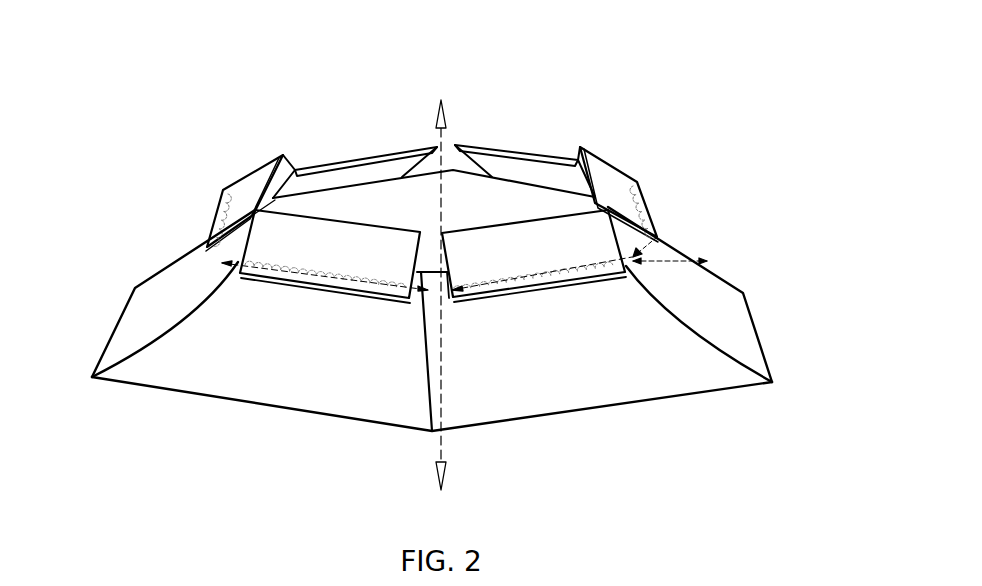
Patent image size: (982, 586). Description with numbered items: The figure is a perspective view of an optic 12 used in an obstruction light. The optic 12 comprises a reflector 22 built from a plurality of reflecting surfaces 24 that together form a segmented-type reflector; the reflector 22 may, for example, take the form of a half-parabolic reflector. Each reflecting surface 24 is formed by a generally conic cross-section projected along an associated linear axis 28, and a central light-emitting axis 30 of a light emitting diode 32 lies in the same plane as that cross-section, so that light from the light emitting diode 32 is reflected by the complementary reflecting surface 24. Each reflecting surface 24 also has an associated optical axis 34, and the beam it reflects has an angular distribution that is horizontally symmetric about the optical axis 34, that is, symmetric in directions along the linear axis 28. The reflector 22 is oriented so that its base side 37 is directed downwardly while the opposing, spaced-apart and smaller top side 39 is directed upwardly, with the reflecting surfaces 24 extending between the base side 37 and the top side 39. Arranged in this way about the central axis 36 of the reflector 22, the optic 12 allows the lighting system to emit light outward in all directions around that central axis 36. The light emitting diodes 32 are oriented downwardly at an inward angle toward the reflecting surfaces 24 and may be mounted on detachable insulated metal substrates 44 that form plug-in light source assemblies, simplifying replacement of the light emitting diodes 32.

The optic 12 is at (533, 98).
The reflector 22 is at (380, 190).
The reflecting surface 24 is at (127, 338).
The linear axis 28 is at (227, 265).
The central light-emitting axis 30 is at (640, 248).
The light emitting diode 32 is at (228, 206).
The optical axis 34 is at (697, 268).
The central axis 36 is at (440, 450).
The base side 37 is at (258, 407).
The top side 39 is at (525, 178).
The insulated metal substrate 44 is at (255, 178).